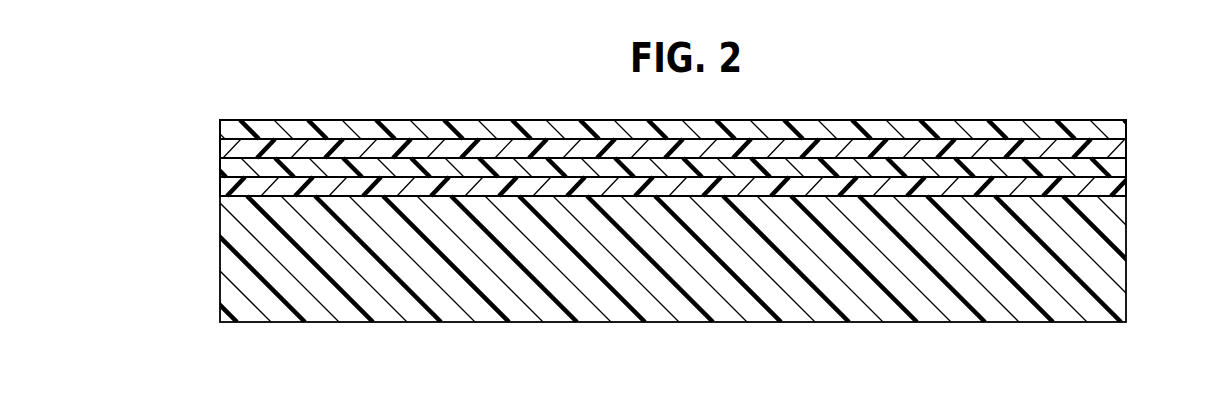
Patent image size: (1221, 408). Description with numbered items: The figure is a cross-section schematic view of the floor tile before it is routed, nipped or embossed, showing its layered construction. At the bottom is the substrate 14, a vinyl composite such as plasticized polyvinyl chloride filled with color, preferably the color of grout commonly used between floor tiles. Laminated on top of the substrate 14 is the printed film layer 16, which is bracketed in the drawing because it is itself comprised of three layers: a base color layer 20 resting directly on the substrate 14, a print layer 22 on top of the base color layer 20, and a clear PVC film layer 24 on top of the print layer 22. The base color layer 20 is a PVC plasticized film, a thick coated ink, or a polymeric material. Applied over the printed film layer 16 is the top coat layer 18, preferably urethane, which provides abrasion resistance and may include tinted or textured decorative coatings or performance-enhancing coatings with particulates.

The substrate 14 is at (1123, 275).
The printed film layer 16 is at (668, 150).
The top coat layer 18 is at (268, 122).
The base color layer 20 is at (222, 185).
The print layer 22 is at (223, 172).
The clear PVC film layer 24 is at (222, 150).